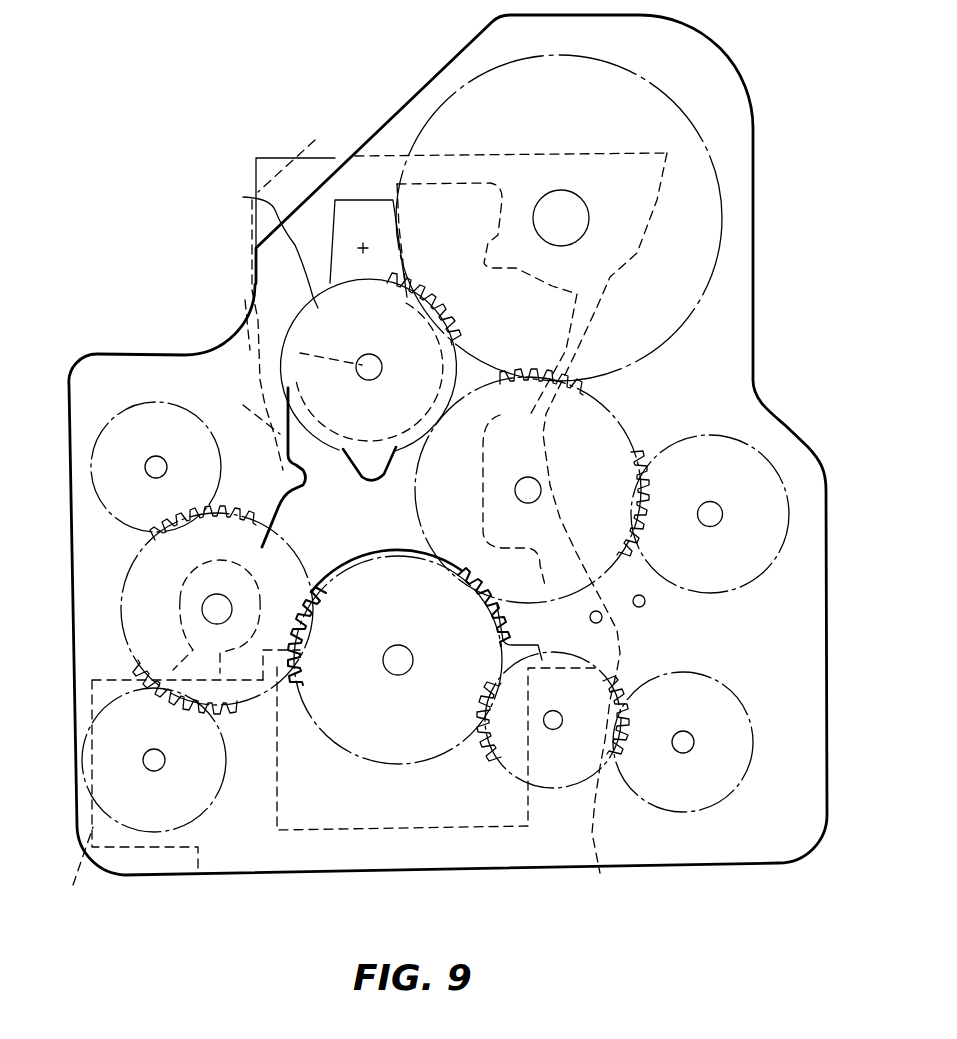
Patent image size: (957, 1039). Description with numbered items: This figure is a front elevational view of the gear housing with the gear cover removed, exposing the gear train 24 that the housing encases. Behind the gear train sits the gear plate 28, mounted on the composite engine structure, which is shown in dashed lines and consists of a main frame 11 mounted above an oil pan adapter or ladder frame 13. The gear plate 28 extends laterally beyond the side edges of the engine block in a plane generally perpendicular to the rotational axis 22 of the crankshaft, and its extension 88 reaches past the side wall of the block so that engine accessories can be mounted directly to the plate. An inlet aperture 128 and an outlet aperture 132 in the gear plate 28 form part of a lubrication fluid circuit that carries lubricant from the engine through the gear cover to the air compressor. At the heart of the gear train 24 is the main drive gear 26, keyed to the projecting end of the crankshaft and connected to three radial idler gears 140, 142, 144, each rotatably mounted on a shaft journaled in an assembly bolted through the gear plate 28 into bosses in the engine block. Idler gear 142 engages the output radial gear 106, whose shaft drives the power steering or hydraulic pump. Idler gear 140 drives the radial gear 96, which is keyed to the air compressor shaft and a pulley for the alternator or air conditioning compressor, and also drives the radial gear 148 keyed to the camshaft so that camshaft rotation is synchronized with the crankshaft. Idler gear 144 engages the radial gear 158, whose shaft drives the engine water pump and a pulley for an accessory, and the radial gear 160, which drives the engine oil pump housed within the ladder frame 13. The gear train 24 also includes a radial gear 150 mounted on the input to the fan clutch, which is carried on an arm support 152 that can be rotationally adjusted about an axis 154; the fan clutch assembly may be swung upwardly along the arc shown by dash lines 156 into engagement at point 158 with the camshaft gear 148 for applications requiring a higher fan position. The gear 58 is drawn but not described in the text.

The main frame 11 is at (280, 170).
The ladder frame 13 is at (355, 529).
The rotational axis 22 is at (405, 660).
The gear train 24 is at (395, 186).
The main drive gear 26 is at (412, 752).
The gear plate 28 is at (107, 365).
The idler gear 58 is at (103, 452).
The extension 88 is at (166, 386).
The radial gear 96 is at (722, 452).
The output radial gear 106 is at (740, 766).
The inlet aperture 128 is at (590, 618).
The outlet aperture 132 is at (647, 605).
The idler gear 140 is at (432, 490).
The idler gear 142 is at (518, 768).
The idler gear 144 is at (285, 565).
The radial gear 148 is at (565, 210).
The radial gear 150 is at (332, 329).
The arm support 152 is at (301, 156).
The axis 154 is at (363, 248).
The dash lines 156 is at (255, 298).
The radial gear 158 is at (460, 90).
The radial gear 160 is at (172, 815).